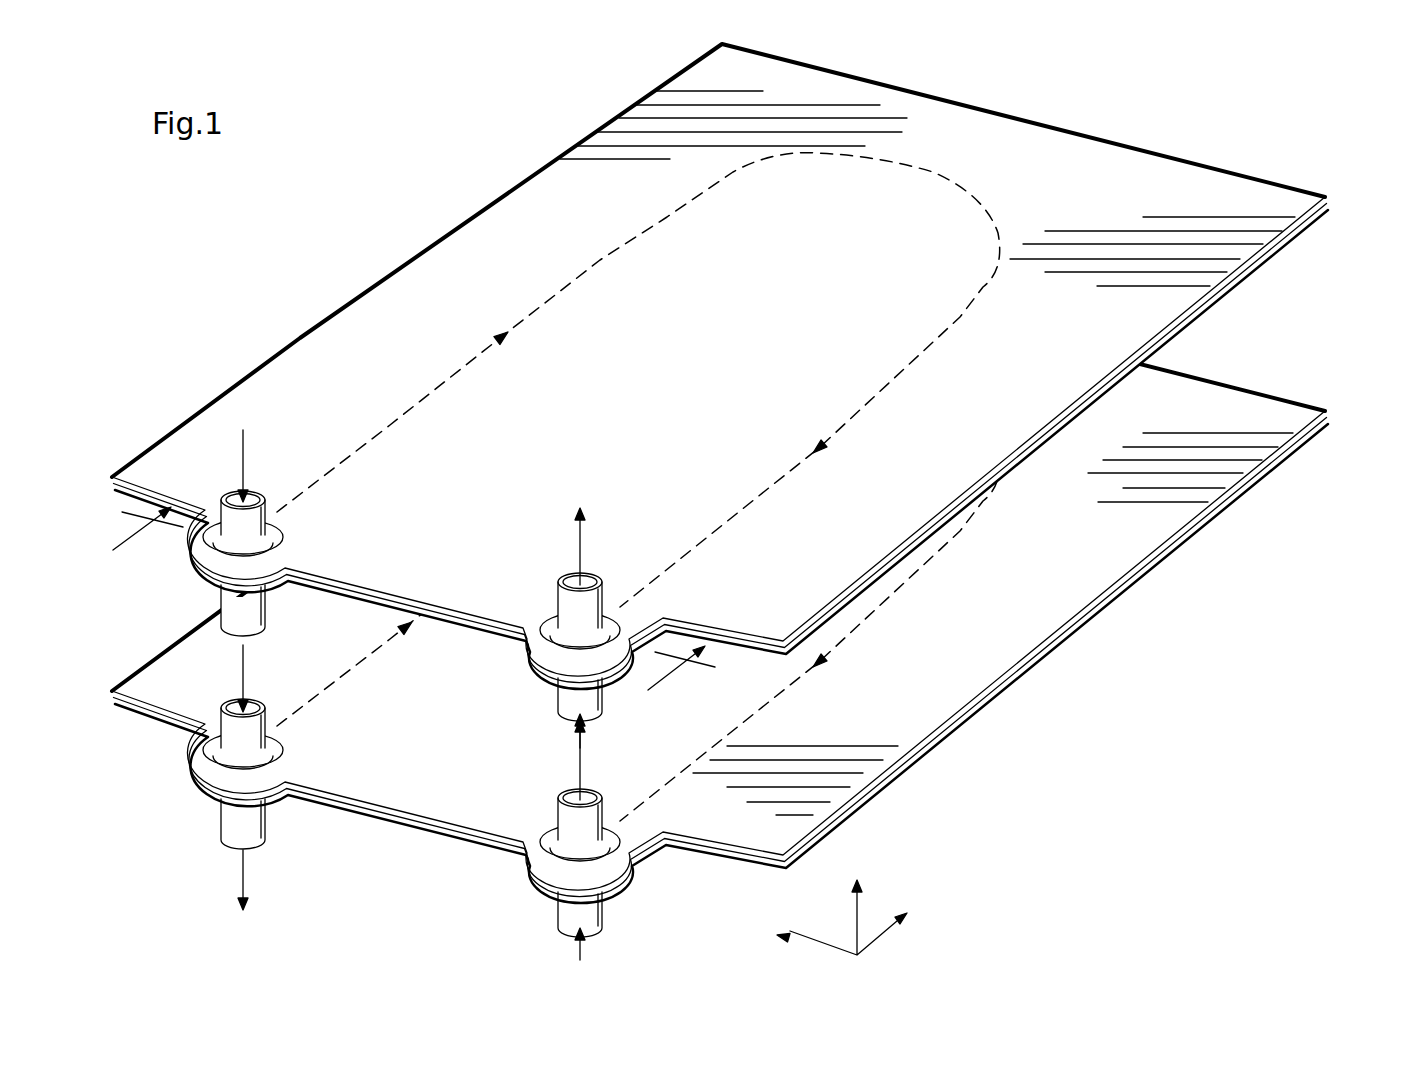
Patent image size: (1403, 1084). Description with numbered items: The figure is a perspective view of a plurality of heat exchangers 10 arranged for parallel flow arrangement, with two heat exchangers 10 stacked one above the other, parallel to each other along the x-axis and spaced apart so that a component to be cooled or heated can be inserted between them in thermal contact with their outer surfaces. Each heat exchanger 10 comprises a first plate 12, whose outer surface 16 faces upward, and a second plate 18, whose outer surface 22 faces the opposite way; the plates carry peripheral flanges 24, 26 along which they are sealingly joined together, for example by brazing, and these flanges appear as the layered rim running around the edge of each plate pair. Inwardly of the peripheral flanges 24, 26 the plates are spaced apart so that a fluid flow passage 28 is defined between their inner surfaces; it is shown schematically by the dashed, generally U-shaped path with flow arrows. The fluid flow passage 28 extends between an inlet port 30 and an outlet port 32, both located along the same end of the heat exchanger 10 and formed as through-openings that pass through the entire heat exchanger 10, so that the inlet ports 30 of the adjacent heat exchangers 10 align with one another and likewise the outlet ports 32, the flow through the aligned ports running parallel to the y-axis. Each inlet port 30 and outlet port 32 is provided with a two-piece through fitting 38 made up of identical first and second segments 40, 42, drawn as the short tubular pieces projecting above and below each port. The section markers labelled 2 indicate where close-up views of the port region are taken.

The heat exchanger 10 is at (752, 502).
The first plate 12 is at (718, 429).
The outer surface of first plate 16 is at (502, 226).
The second plate 18 is at (757, 536).
The outer surface of second plate 22 is at (757, 536).
The peripheral flange of first plate 24 is at (757, 536).
The peripheral flange of second plate 26 is at (1325, 233).
The fluid flow passage 28 is at (447, 368).
The inlet port 30 is at (282, 531).
The outlet port 32 is at (612, 630).
The two-piece through fitting 38 is at (222, 518).
The first segment 40 is at (265, 497).
The second segment 42 is at (272, 617).
The section line 2 is at (409, 600).